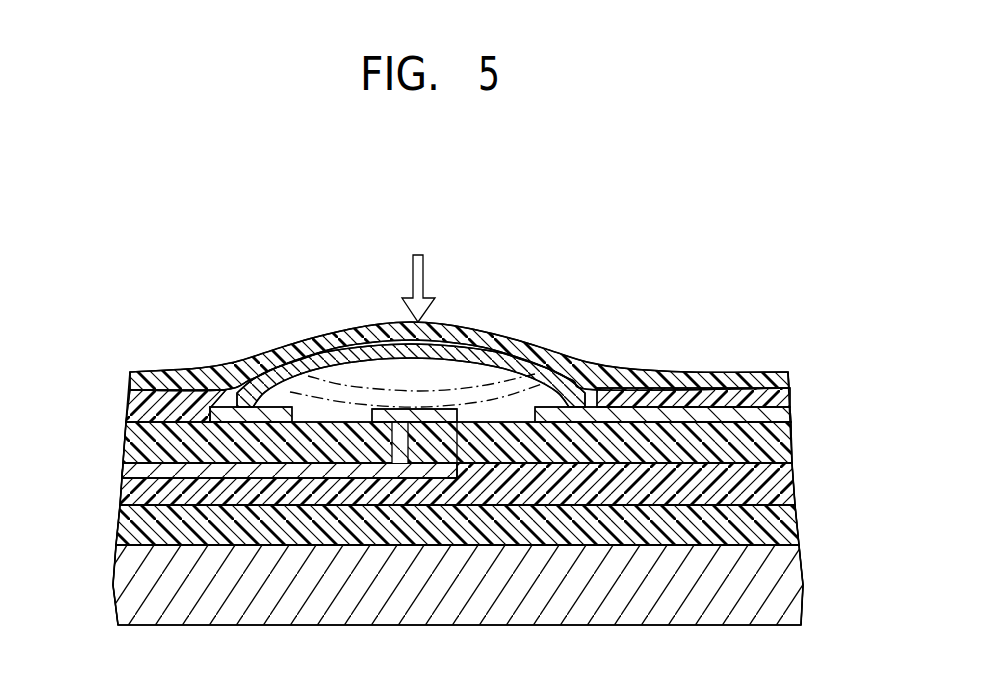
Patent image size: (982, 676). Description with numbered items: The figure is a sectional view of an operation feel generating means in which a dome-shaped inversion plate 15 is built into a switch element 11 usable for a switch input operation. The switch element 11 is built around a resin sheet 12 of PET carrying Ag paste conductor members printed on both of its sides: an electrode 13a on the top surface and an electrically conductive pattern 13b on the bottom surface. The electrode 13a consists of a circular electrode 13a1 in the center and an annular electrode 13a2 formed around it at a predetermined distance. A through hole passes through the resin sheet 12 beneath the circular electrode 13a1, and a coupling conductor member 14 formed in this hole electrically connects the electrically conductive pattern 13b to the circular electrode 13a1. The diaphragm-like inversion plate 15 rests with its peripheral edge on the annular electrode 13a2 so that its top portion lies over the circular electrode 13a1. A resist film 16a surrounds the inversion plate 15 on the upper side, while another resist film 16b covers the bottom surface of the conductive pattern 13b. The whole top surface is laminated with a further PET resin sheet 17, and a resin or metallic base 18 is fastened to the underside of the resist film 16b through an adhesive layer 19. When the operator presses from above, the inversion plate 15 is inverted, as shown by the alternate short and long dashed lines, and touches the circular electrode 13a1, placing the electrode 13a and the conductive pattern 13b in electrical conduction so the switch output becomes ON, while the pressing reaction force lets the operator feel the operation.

The switch element 11 is at (612, 300).
The resin sheet 12 is at (778, 457).
The electrode 13a is at (790, 418).
The circular electrode 13a1 is at (438, 410).
The annular electrode 13a2 is at (229, 408).
The electrically conductive pattern 13b is at (129, 472).
The coupling conductor member 14 is at (402, 435).
The inversion plate 15 is at (304, 364).
The resist film 16a is at (131, 405).
The resist film 16b is at (125, 497).
The resin sheet 17 is at (788, 379).
The base 18 is at (770, 597).
The adhesive layer 19 is at (127, 530).